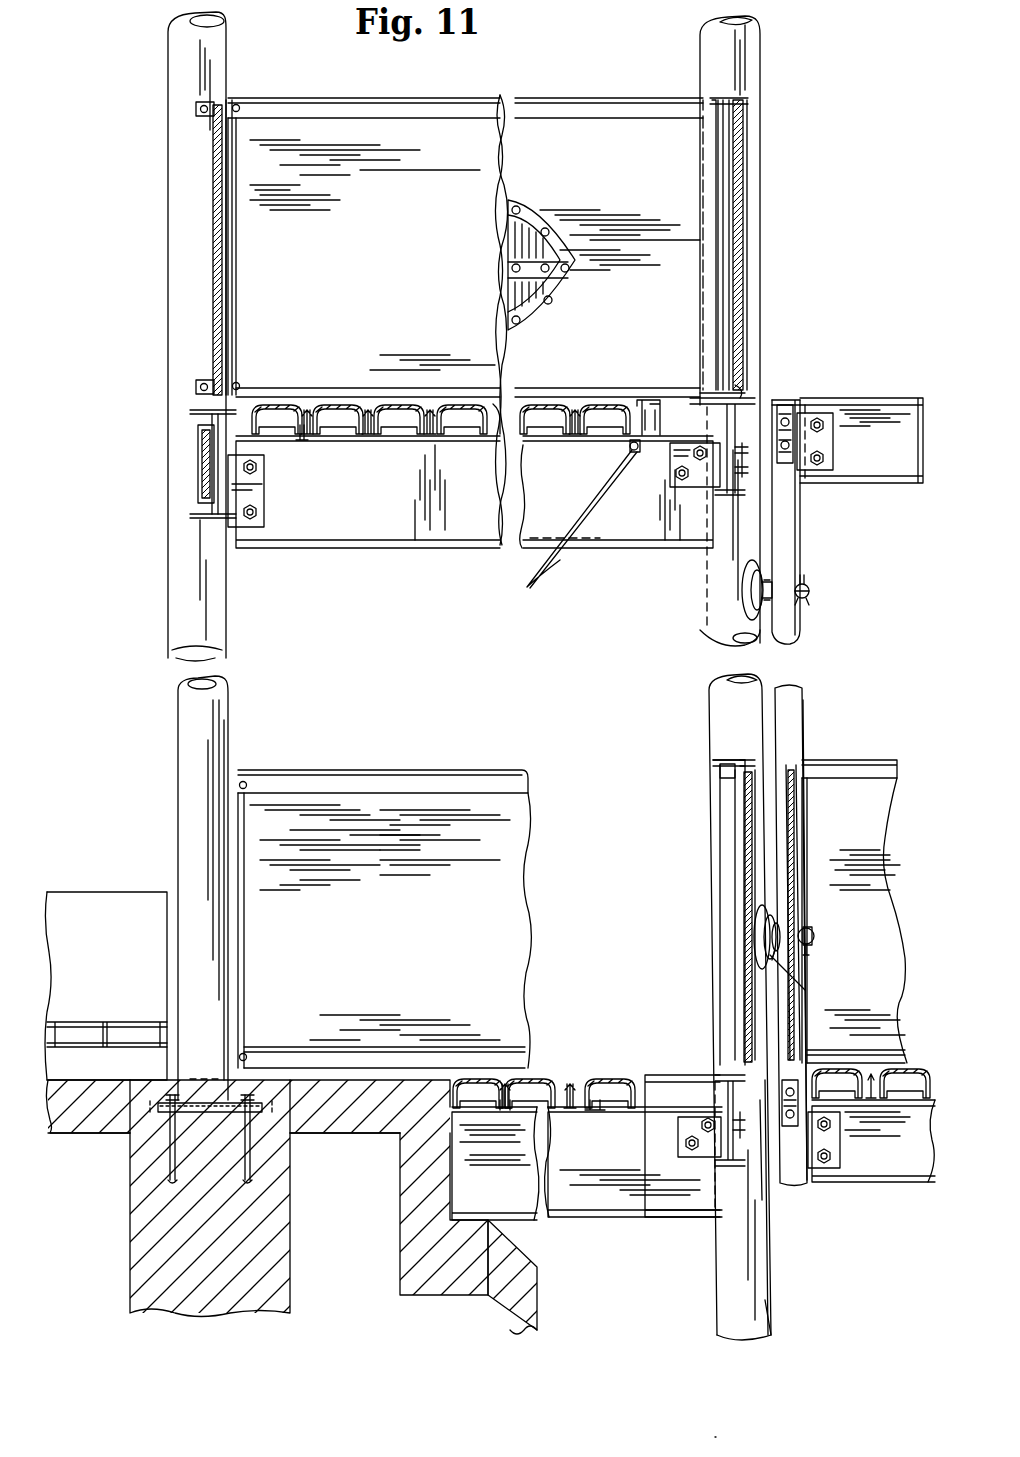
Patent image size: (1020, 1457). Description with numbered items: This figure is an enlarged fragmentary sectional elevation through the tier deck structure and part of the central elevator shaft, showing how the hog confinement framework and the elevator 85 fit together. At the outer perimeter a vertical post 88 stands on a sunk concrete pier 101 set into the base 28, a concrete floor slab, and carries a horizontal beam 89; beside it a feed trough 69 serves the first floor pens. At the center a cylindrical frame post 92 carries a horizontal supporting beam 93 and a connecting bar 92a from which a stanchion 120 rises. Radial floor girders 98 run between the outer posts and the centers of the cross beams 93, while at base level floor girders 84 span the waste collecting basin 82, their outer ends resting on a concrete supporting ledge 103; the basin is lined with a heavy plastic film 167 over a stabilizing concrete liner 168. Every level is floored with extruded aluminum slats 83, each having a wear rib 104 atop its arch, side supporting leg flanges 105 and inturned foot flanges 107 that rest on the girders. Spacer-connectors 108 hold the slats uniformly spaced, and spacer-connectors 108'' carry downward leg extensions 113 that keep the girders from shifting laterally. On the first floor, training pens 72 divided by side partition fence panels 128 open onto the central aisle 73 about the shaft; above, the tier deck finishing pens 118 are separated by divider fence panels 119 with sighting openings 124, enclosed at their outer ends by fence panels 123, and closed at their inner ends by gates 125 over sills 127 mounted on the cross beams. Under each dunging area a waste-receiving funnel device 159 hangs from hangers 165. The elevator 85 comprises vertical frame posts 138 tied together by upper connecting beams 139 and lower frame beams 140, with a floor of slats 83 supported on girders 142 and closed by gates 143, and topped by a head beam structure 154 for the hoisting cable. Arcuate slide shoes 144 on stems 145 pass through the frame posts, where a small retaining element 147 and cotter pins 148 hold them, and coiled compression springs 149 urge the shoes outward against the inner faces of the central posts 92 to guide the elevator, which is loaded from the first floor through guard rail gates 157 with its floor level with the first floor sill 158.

The base 28 is at (78, 1130).
The feed trough 69 is at (94, 896).
The training pen 72 is at (302, 793).
The central aisle 73 is at (619, 793).
The waste collecting sump basin 82 is at (538, 1262).
The floor slats 83 is at (375, 405).
The floor beams or girders 84 is at (570, 1210).
The elevator 85 is at (885, 374).
The vertical post 88 is at (180, 690).
The horizontal beam 89 is at (200, 455).
The vertical frame post 92 is at (704, 672).
The bar 92a is at (738, 396).
The horizontal supporting beam 93 is at (745, 410).
The floor girder 98 is at (425, 535).
The concrete pier 101 is at (135, 1220).
The concrete supporting ledge 103 is at (412, 1240).
The wear rib 104 is at (478, 1100).
The supporting leg flange 105 is at (490, 1105).
The foot flange 107 is at (598, 1103).
The connector 108 is at (546, 1063).
The spacer-connector 108'' is at (433, 387).
The leg extension 113 is at (300, 440).
The hog finishing pen 118 is at (311, 127).
The divider fence panel 119 is at (505, 125).
The stanchion 120 is at (718, 280).
The outer end enclosure fence panel 123 is at (222, 297).
The sighting opening 124 is at (555, 282).
The gate 125 is at (740, 236).
The sill 127 is at (660, 418).
The side partition fence panel 128 is at (492, 800).
The elevator frame post 138 is at (790, 541).
The connecting beam 139 is at (793, 402).
The lower frame beam 140 is at (805, 1065).
The elevator floor girder 142 is at (905, 1165).
The elevator gate 143 is at (790, 860).
The slide shoe 144 is at (745, 590).
The stem 145 is at (808, 594).
The pin 147 is at (812, 950).
The cotter pin 148 is at (812, 928).
The coiled compression spring 149 is at (770, 586).
The head beam structure 154 is at (905, 478).
The guard rail gate 157 is at (745, 870).
The first floor sill 158 is at (680, 1075).
The waste-receiving funnel device 159 is at (560, 558).
The hanger 165 is at (634, 452).
The plastic film liner 167 is at (483, 1293).
The concrete liner 168 is at (518, 1312).